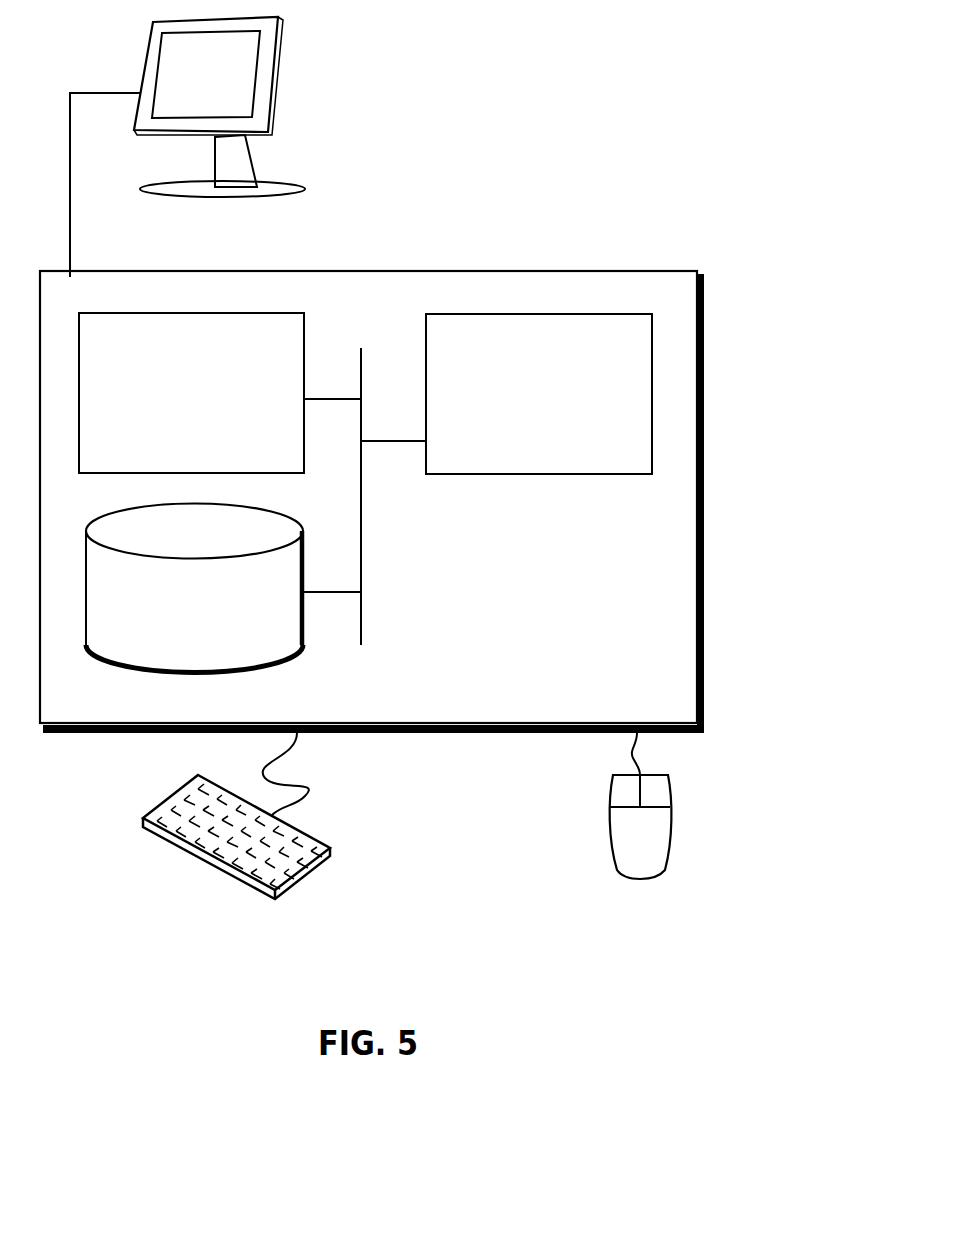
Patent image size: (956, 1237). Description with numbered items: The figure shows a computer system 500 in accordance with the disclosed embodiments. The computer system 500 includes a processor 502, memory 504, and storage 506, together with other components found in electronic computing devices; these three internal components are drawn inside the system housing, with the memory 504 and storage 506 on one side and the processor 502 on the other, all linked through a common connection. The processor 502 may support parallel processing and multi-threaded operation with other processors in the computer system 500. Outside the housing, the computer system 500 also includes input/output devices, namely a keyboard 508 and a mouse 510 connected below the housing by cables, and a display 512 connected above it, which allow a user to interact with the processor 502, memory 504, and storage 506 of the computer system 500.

The computer system 500 is at (415, 250).
The processor 502 is at (521, 406).
The memory 504 is at (171, 406).
The storage 506 is at (177, 618).
The keyboard 508 is at (162, 838).
The mouse 510 is at (619, 847).
The display 512 is at (187, 147).